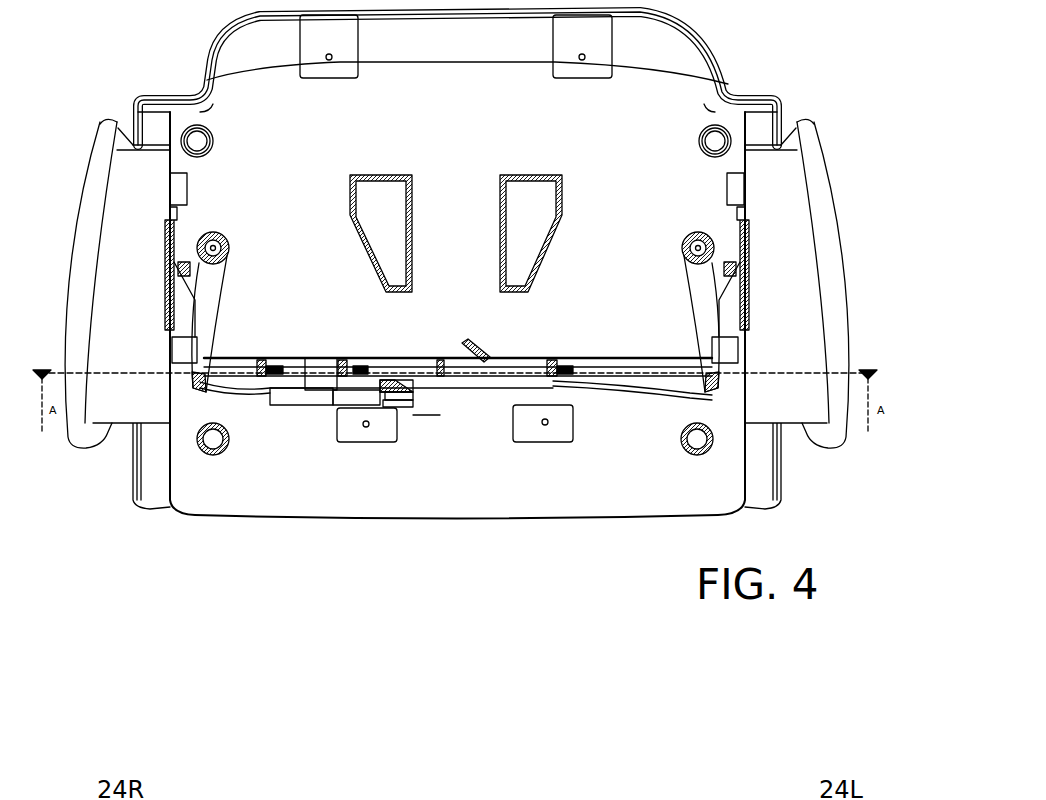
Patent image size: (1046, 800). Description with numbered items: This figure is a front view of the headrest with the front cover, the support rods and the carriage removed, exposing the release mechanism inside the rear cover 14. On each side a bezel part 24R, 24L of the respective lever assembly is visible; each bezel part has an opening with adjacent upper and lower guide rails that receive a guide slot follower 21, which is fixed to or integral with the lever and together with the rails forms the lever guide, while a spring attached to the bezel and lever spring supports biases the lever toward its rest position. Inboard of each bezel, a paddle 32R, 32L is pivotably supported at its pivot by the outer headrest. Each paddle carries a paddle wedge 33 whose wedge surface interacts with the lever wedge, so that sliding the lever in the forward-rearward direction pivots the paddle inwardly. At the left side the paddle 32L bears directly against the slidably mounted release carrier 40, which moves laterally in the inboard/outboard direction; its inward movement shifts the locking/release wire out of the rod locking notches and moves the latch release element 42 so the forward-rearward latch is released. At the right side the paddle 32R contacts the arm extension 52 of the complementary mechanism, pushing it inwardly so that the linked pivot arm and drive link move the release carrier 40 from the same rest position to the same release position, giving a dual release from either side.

The rear cover 14 is at (690, 28).
The bezel part (right side) 24R is at (87, 214).
The bezel part (left side) 24L is at (830, 218).
The guide slot follower 21 is at (175, 247).
The paddle (right side) 32R is at (208, 325).
The paddle (left side) 32L is at (690, 320).
The paddle wedge 33 is at (185, 348).
The release carrier 40 is at (588, 365).
The latch release element 42 is at (483, 358).
The arm extension 52 is at (322, 390).